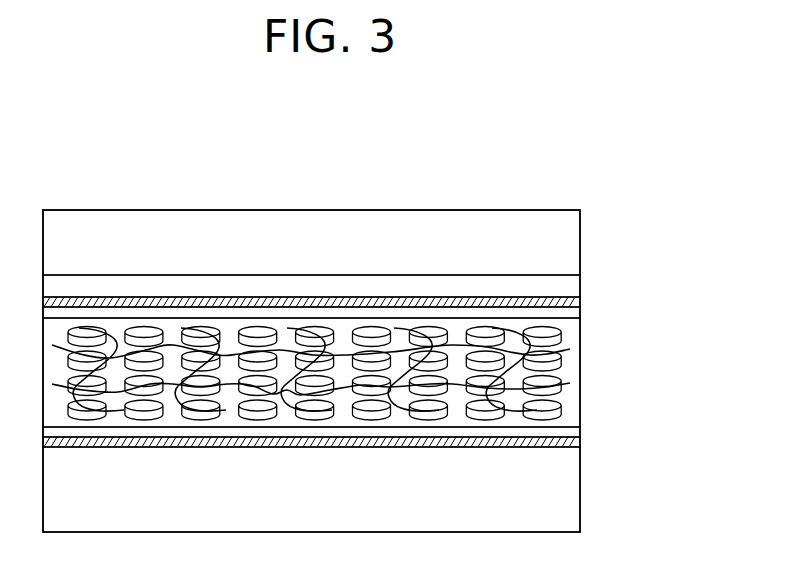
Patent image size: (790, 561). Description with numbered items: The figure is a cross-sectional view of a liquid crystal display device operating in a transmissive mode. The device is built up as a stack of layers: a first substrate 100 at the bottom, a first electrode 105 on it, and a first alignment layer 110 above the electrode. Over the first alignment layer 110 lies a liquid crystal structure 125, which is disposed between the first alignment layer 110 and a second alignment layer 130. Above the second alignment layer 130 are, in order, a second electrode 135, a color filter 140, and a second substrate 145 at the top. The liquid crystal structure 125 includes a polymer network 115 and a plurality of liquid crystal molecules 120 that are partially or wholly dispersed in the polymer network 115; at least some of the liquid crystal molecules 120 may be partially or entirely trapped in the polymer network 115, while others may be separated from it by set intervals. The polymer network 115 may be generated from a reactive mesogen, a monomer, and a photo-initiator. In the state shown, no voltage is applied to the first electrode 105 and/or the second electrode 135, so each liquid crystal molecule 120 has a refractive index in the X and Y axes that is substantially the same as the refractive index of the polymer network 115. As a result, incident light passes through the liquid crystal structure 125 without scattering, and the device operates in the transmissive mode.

The first substrate 100 is at (575, 487).
The first electrode 105 is at (578, 445).
The first alignment layer 110 is at (578, 428).
The polymer network 115 is at (565, 372).
The liquid crystal molecules 120 is at (563, 336).
The liquid crystal structure 125 is at (667, 333).
The second alignment layer 130 is at (578, 313).
The second electrode 135 is at (578, 302).
The color filter 140 is at (575, 283).
The second substrate 145 is at (575, 228).